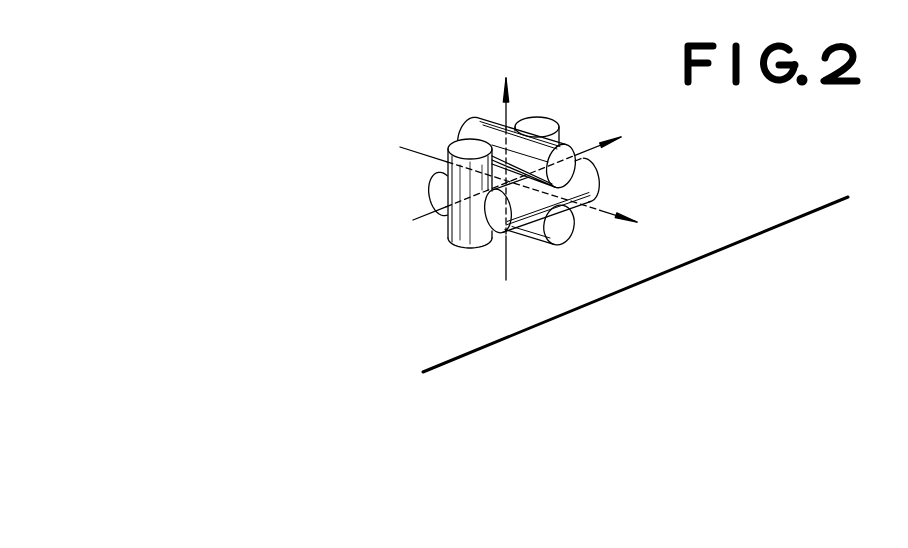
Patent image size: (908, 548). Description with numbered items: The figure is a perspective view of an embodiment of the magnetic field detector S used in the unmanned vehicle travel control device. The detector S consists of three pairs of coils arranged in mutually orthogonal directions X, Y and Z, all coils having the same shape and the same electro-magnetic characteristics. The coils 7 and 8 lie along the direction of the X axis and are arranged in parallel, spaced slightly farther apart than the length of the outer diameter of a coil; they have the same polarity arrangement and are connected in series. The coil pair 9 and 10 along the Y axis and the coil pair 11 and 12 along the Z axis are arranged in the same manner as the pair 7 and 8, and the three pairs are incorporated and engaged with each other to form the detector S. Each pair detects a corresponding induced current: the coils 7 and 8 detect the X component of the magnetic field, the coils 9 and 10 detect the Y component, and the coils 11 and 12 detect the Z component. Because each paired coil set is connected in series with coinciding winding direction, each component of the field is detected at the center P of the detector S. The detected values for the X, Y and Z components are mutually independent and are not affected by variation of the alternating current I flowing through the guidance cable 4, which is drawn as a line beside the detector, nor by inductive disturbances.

The guidance cable 4 is at (792, 217).
The coil 7 is at (573, 167).
The coil 8 is at (562, 227).
The coil 9 is at (502, 216).
The coil 10 is at (440, 186).
The coil 11 is at (458, 149).
The coil 12 is at (541, 130).
The center of the detector P is at (449, 170).
The magnetic field detector S is at (438, 226).
The alternating current I is at (730, 276).
The X axis direction X is at (527, 192).
The Y axis direction Y is at (524, 167).
The Z axis direction Z is at (502, 164).